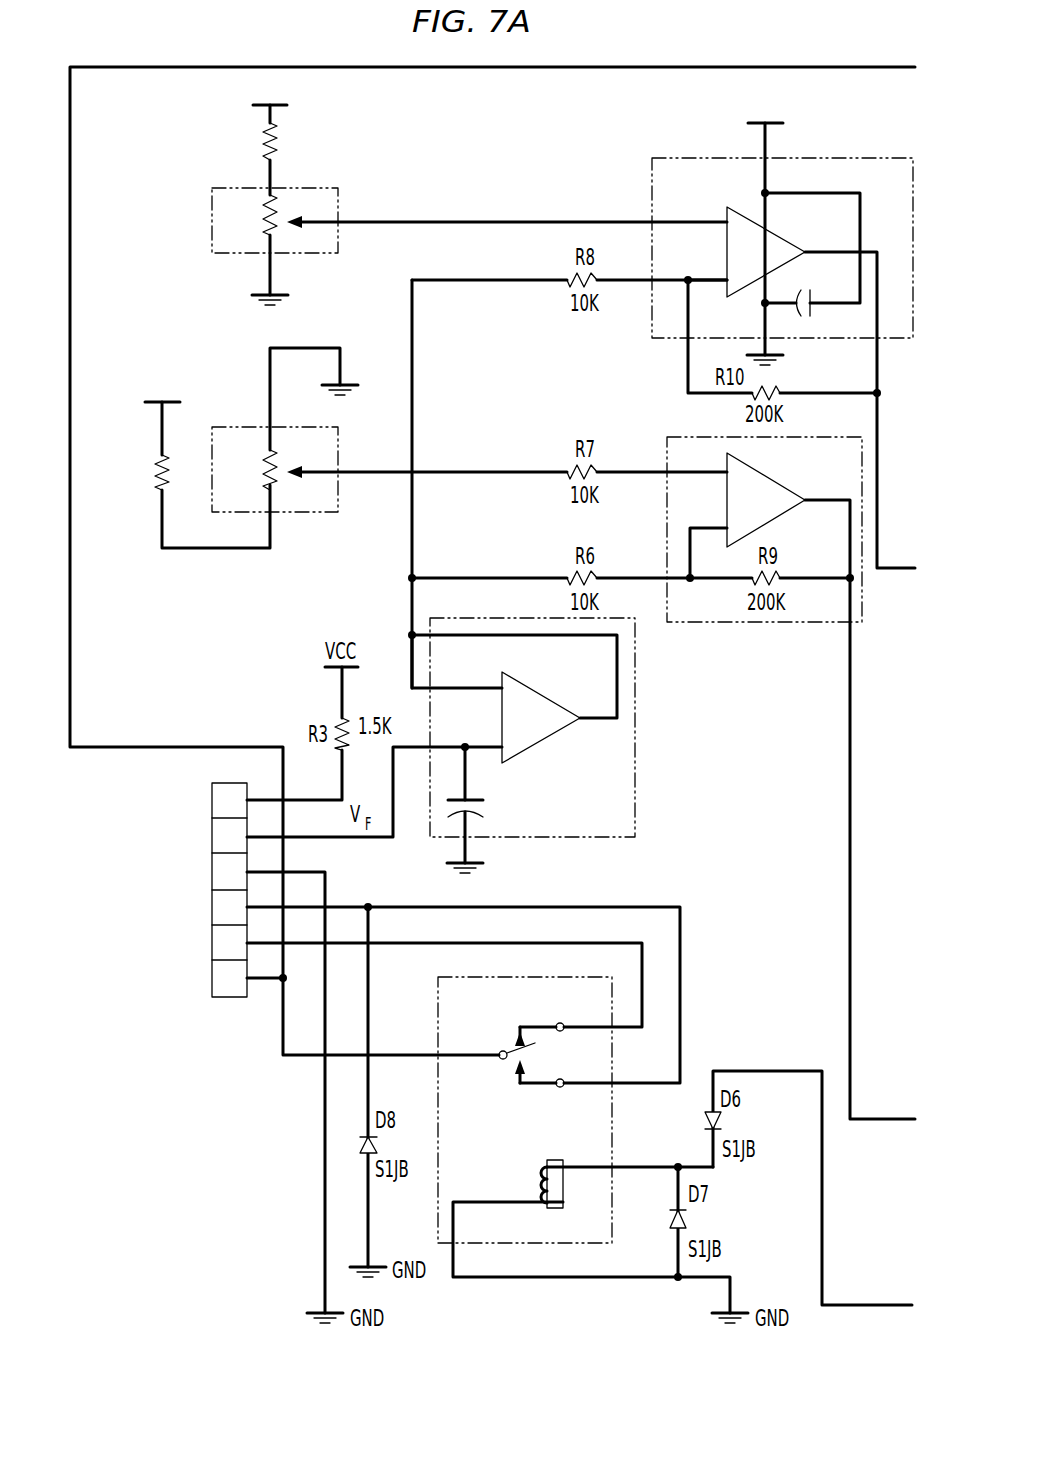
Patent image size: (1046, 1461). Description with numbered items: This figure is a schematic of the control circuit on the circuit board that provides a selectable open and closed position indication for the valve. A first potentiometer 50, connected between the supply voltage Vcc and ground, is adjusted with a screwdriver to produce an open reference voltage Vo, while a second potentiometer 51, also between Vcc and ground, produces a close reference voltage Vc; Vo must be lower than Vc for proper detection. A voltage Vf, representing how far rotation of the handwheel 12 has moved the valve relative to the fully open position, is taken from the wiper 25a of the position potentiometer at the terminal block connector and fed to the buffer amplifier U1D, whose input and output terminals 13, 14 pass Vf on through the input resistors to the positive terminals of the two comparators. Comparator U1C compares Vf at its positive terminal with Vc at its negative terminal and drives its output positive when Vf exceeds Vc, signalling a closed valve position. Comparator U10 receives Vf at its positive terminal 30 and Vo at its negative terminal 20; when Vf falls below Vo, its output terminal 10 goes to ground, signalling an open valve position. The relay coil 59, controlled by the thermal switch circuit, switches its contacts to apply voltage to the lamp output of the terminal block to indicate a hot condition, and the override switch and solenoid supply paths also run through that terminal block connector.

The first potentiometer 50 is at (325, 254).
The second potentiometer 51 is at (305, 513).
The relay coil 59 is at (437, 1007).
The wiper 25a is at (145, 830).
The comparator circuit amplifier U10 is at (769, 330).
The comparator circuit amplifier U1C is at (792, 622).
The buffer amplifier U1D is at (479, 749).
The negative terminal 20 is at (717, 215).
The positive terminal 30 is at (720, 275).
The output terminal 10 is at (860, 400).
The handwheel 12 is at (484, 732).
The inverting input of U1D 13 is at (484, 676).
The output of U1D 14 is at (594, 704).